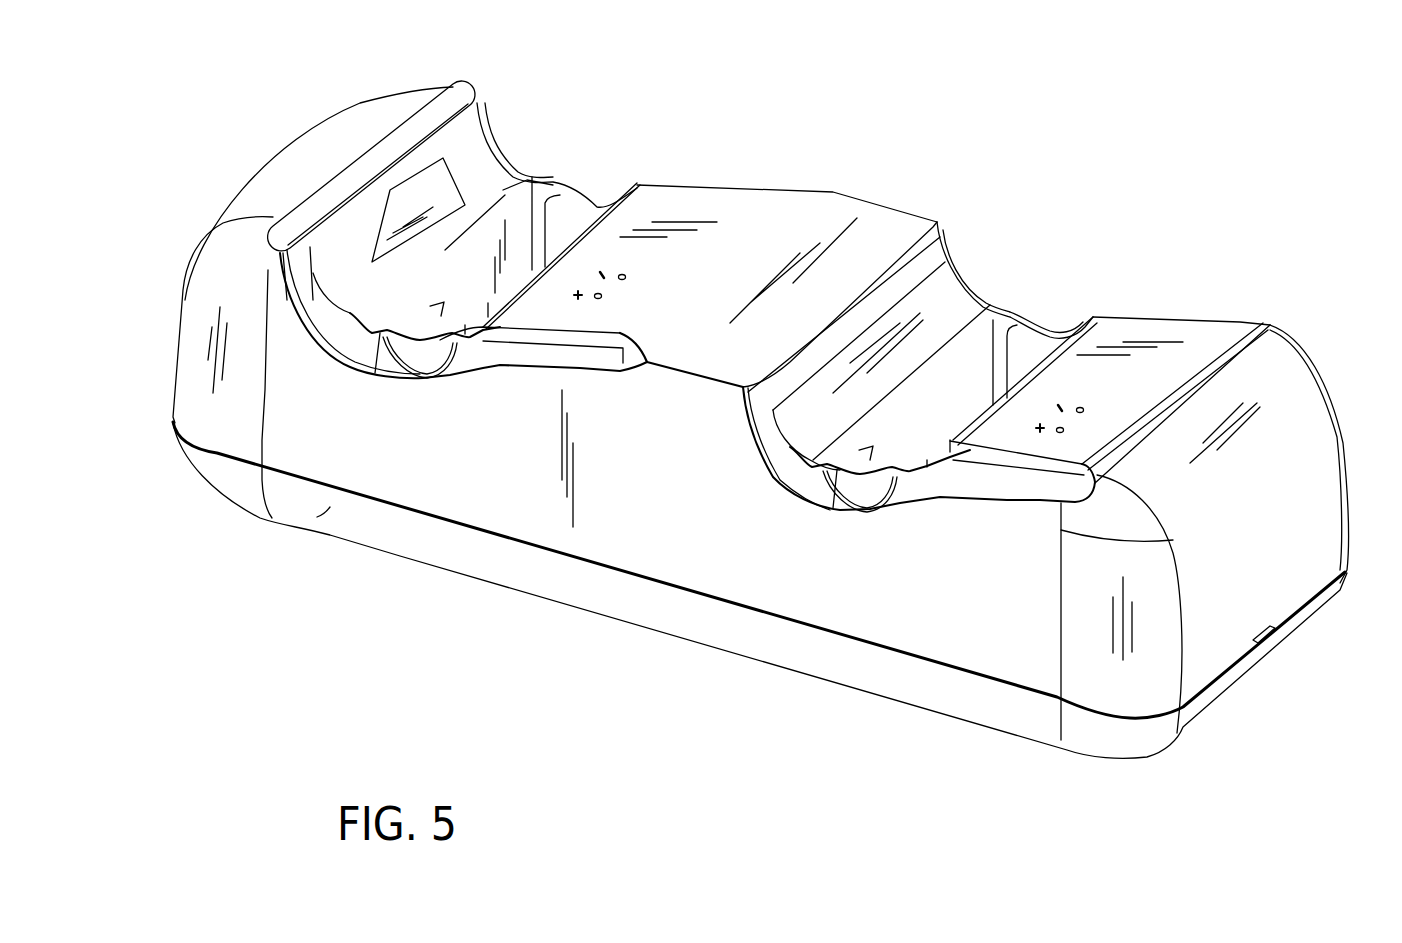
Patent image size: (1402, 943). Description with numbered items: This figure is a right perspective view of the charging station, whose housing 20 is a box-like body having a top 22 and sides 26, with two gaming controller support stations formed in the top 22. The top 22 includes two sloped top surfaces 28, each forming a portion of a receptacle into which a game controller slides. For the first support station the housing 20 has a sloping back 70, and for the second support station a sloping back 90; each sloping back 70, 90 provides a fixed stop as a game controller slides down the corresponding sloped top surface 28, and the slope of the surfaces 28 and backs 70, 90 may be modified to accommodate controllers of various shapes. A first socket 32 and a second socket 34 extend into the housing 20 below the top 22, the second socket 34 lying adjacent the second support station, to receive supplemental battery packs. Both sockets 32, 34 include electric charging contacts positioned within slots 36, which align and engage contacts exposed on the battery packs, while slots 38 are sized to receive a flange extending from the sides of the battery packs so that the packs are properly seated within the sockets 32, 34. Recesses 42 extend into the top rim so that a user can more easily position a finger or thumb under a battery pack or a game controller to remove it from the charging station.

The housing 20 is at (186, 306).
The top 22 is at (843, 213).
The sides 26 is at (847, 590).
The sloped top surface 28 is at (712, 198).
The first socket 32 is at (440, 305).
The second socket 34 is at (858, 450).
The slots for the contacts 36 is at (488, 310).
The slots 38 is at (592, 200).
The recesses 42 is at (553, 185).
The sloping back 70 is at (480, 173).
The sloping back 90 is at (953, 317).